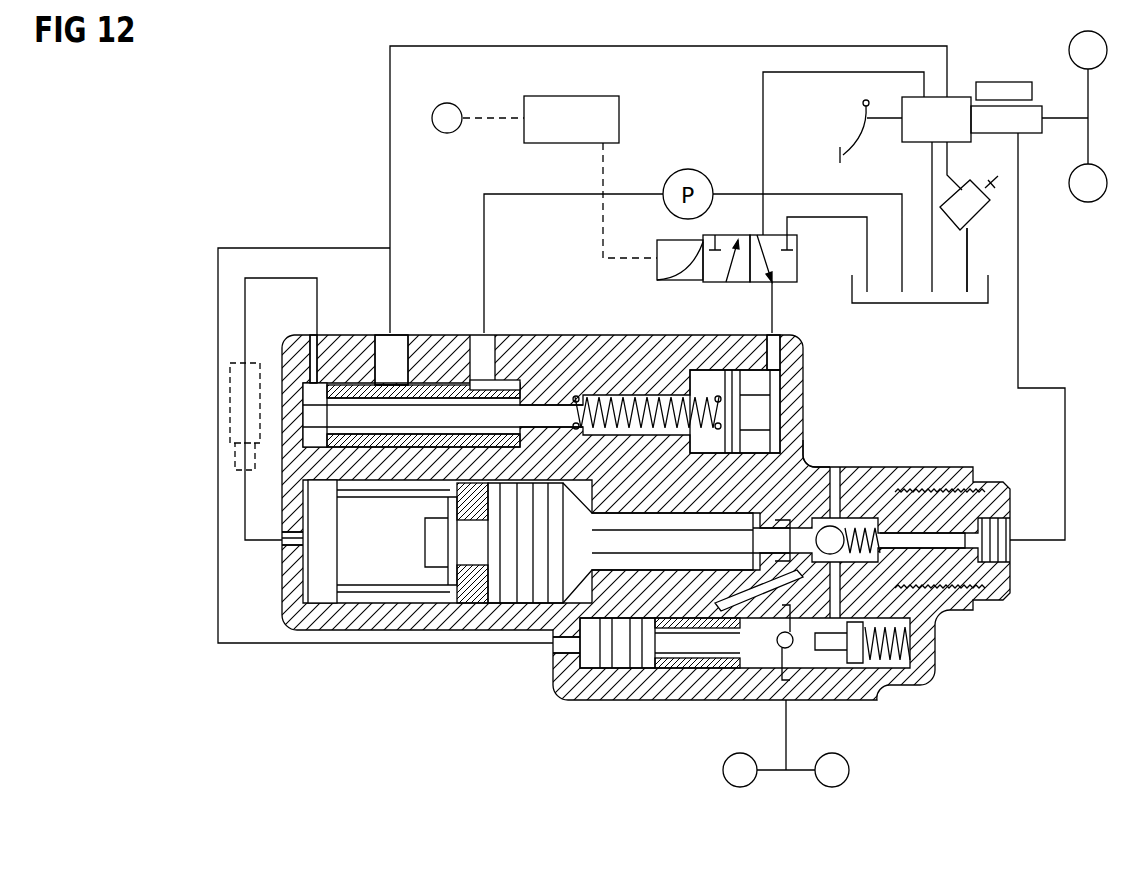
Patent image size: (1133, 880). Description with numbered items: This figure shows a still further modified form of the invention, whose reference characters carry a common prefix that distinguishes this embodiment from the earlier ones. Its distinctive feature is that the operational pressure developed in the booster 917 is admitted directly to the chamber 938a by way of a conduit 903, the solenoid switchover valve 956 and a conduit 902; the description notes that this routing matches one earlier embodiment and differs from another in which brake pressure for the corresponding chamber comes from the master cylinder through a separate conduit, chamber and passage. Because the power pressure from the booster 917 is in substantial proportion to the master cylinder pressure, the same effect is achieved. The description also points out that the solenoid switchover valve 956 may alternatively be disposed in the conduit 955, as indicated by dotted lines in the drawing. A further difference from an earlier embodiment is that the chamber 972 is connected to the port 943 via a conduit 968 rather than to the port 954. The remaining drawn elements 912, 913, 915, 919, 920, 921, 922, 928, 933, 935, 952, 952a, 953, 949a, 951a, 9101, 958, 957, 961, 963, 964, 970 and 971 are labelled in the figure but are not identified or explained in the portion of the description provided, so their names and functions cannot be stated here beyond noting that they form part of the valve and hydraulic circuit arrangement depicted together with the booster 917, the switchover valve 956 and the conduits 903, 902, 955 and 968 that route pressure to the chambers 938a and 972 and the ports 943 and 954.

The brake valve assembly 912 is at (897, 403).
The reservoir 913 is at (879, 306).
The pressure line 915 is at (830, 46).
The booster 917 is at (953, 97).
The line 919 is at (949, 164).
The check valve 920 is at (974, 220).
The return line 921 is at (931, 306).
The return line 922 is at (970, 270).
The hydraulic pump unit 928 is at (1019, 152).
The conduit 903 is at (794, 74).
The conduit 902 is at (771, 304).
The sensor 933 is at (447, 103).
The control device 935 is at (586, 96).
The conduit 968 is at (266, 248).
The conduit 955 is at (246, 314).
The solenoid switchover valve 956 is at (228, 398).
The port 954 is at (315, 335).
The port 943 is at (395, 347).
The valve spool 952 is at (437, 398).
The spool land 952a is at (473, 395).
The spool rod 953 is at (443, 415).
The spool land 949a is at (458, 440).
The piston 951a is at (776, 410).
The port 9101 is at (782, 356).
The chamber 938a is at (796, 452).
The piston 958 is at (385, 556).
The port 957 is at (292, 546).
The spool 961 is at (500, 578).
The piston 963 is at (684, 539).
The ball valve 964 is at (833, 533).
The port 970 is at (560, 646).
The ball valve 971 is at (785, 655).
The chamber 972 is at (582, 660).